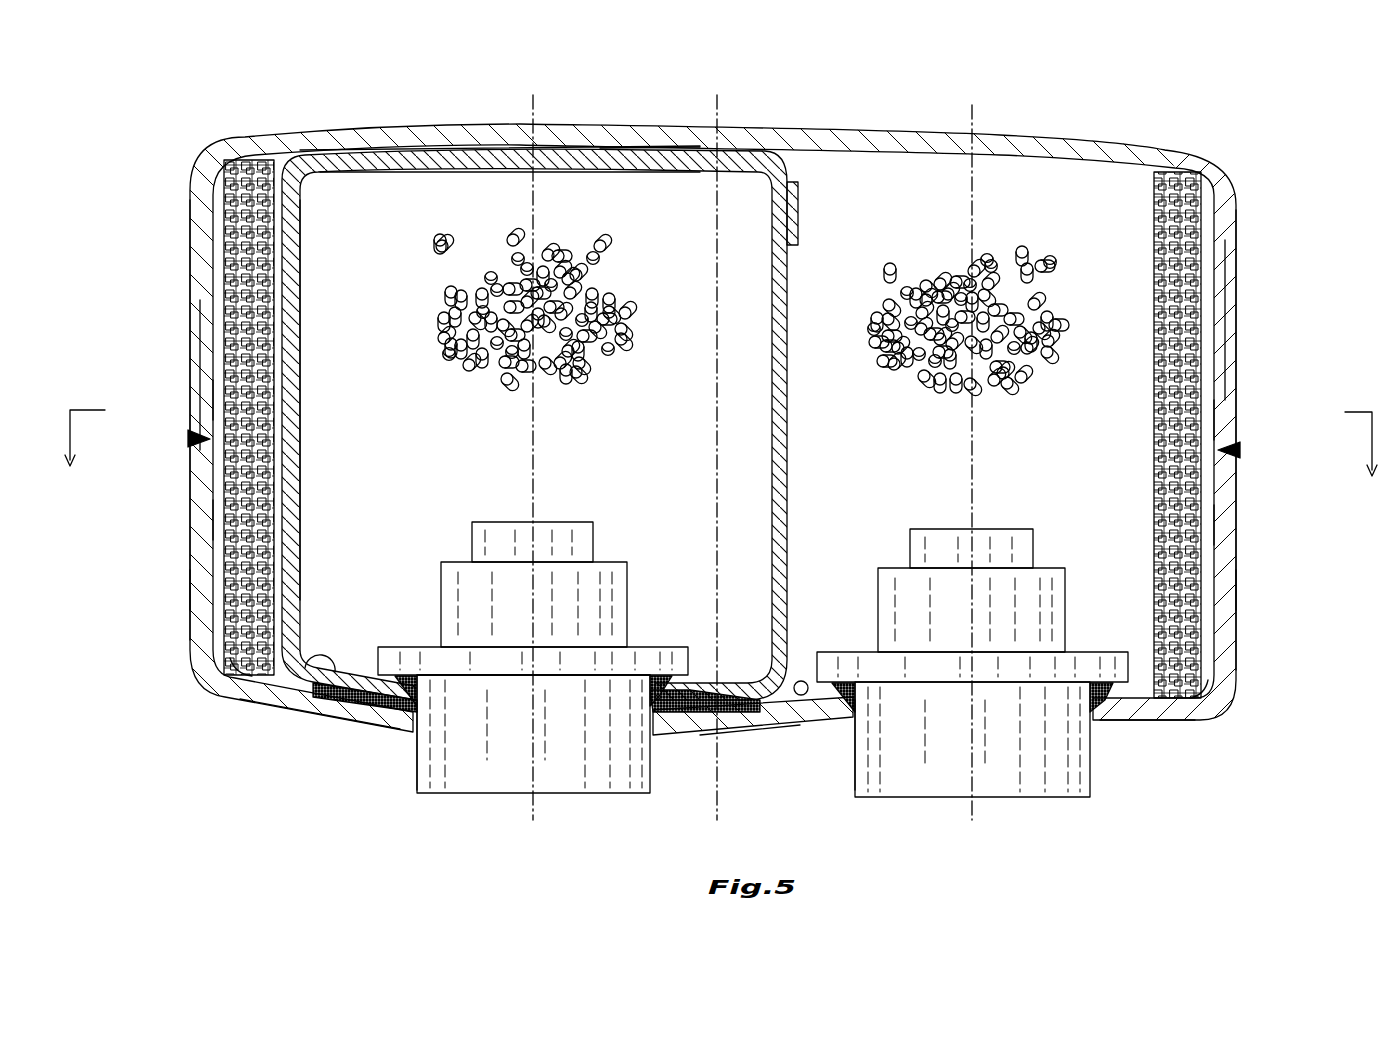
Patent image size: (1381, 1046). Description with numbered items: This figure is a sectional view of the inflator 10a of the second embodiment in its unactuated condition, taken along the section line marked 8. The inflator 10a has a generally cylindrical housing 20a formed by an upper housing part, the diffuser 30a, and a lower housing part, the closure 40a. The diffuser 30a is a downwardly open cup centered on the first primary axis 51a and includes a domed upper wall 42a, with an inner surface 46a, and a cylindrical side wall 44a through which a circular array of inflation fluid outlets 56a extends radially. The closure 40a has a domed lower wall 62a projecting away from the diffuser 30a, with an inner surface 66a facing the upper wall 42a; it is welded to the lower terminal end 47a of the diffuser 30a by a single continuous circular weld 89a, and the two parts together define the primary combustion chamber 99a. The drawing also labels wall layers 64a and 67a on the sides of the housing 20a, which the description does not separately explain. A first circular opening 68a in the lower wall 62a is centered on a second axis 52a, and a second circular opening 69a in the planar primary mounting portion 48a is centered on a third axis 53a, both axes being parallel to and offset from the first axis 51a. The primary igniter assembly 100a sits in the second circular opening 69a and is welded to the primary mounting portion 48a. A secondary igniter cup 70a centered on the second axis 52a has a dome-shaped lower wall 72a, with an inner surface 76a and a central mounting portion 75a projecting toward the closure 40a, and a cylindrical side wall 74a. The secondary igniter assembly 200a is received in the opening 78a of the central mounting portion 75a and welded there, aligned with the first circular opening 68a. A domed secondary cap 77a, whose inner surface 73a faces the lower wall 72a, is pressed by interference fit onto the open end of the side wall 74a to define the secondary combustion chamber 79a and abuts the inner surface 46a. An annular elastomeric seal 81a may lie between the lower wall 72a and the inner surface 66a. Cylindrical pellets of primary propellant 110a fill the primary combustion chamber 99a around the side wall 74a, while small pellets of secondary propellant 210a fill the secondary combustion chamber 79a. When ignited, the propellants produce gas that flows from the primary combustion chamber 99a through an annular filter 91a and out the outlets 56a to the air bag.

The inflator 10a is at (250, 82).
The housing 20a is at (215, 150).
The diffuser 30a is at (1172, 150).
The closure 40a is at (1150, 722).
The upper wall 42a is at (896, 152).
The side wall 44a is at (205, 370).
The inner surface 46a is at (995, 158).
The lower terminal end 47a is at (200, 395).
The primary mounting portion 48a is at (1105, 710).
The first primary axis 51a is at (722, 110).
The second axis 52a is at (540, 112).
The third axis 53a is at (978, 490).
The inflation fluid outlets 56a is at (205, 270).
The lower wall 62a is at (330, 704).
The outer shell layer 64a is at (205, 590).
The inner surface 66a is at (800, 698).
The inner shell layer 67a is at (200, 520).
The first circular opening 68a is at (418, 702).
The second circular opening 69a is at (877, 706).
The secondary igniter cup 70a is at (795, 292).
The lower wall 72a is at (680, 722).
The inner surface 73a is at (490, 148).
The side wall 74a is at (305, 330).
The central mounting portion 75a is at (355, 660).
The inner surface 76a is at (300, 667).
The secondary cap 77a is at (640, 158).
The opening 78a is at (430, 700).
The secondary combustion chamber 79a is at (405, 195).
The annular elastomeric seal 81a is at (730, 718).
The circular weld 89a is at (190, 439).
The annular filter 91a is at (245, 665).
The primary combustion chamber 99a is at (1050, 190).
The primary igniter assembly 100a is at (890, 535).
The primary propellant 110a is at (1068, 380).
The secondary igniter assembly 200a is at (430, 547).
The secondary propellant 210a is at (628, 368).
The section line 8- 8 is at (721, 458).